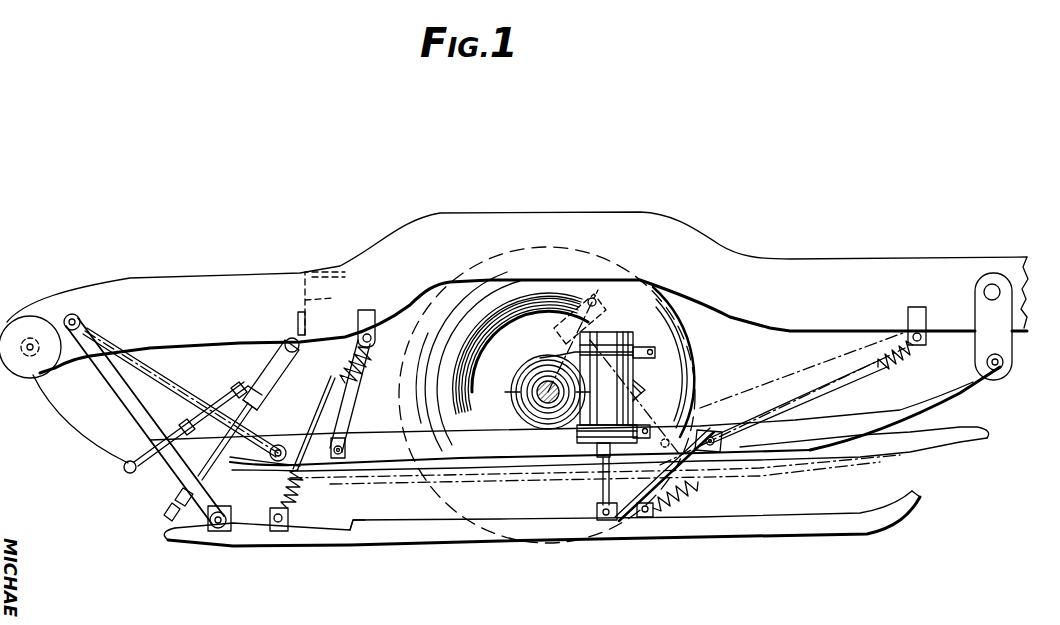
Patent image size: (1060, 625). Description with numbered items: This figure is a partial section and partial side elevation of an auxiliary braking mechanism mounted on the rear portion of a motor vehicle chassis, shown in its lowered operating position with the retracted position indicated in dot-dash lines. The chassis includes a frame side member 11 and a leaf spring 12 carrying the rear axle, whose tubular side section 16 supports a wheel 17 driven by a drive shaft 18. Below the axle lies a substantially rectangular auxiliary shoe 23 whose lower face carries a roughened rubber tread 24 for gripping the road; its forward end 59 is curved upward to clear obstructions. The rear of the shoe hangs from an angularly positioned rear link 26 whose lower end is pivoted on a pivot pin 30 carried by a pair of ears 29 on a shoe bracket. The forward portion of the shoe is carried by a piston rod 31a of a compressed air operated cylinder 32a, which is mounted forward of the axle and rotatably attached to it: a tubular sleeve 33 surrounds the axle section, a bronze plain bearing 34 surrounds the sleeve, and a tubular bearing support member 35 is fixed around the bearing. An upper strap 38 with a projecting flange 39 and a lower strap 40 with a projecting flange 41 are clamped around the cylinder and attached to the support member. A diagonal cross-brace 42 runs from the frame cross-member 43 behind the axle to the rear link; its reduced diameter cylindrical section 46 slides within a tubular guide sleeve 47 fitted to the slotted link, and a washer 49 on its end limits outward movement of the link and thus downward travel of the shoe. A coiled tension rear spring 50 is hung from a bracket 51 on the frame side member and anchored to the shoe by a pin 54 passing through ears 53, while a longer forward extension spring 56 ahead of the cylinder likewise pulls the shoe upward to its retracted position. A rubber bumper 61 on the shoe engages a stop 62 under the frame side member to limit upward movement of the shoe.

The frame side member 11 is at (180, 292).
The leaf spring 12 is at (975, 390).
The tubular side section 16 is at (530, 418).
The wheel 17 is at (440, 488).
The drive shaft 18 is at (547, 352).
The auxiliary shoe 23 is at (705, 518).
The tread 24 is at (335, 548).
The rear link 26 is at (120, 395).
The ear 29 is at (232, 518).
The pivot pin 30 is at (217, 532).
The piston rod 31a is at (604, 485).
The compressed air operated cylinder 32a is at (656, 386).
The tubular sleeve 33 is at (535, 370).
The plain bearing 34 is at (522, 400).
The tubular bearing support member 35 is at (522, 378).
The upper strap 38 is at (610, 332).
The projecting flange 39 is at (653, 346).
The lower strap 40 is at (580, 428).
The projecting flange 41 is at (648, 422).
The cross-brace 42 is at (258, 404).
The frame cross-member 43 is at (330, 303).
The reduced diameter cylindrical section 46 is at (212, 468).
The tubular guide sleeve 47 is at (176, 492).
The washer 49 is at (166, 516).
The coiled tension rear spring 50 is at (345, 364).
The bracket 51 is at (378, 312).
The ear 53 is at (268, 532).
The pin 54 is at (292, 508).
The forward extension spring 56 is at (888, 360).
The forward end 59 is at (925, 497).
The rubber bumper 61 is at (355, 523).
The stop 62 is at (344, 405).